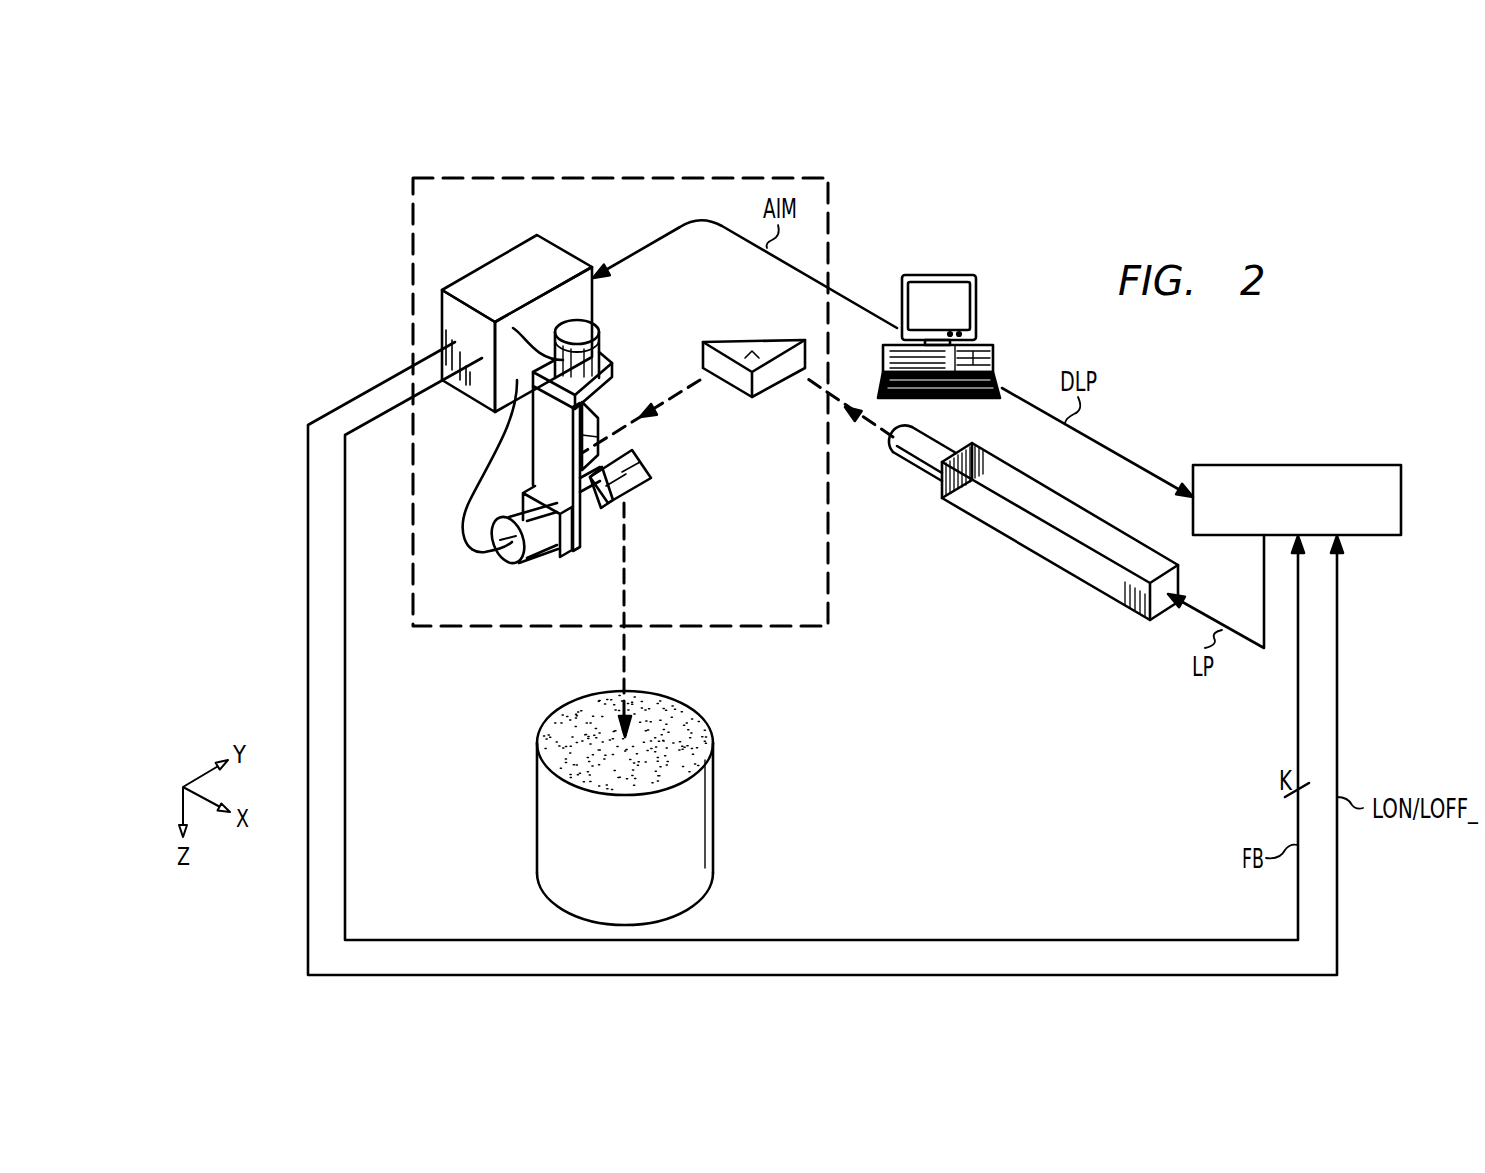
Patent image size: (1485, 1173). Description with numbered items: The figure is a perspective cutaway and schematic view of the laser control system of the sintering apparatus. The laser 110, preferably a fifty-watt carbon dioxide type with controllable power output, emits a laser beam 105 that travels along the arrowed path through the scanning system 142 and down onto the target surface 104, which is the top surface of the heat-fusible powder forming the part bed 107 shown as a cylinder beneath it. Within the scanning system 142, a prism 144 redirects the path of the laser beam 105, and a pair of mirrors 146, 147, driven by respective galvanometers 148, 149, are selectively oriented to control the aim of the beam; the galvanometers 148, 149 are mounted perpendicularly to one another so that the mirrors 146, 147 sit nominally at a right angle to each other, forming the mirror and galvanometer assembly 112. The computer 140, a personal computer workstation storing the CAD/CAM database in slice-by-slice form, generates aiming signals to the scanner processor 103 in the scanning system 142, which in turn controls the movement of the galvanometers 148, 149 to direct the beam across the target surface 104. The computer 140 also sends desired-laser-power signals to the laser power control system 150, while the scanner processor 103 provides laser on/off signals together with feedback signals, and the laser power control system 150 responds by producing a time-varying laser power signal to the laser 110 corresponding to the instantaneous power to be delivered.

The scanner processor 103 is at (482, 277).
The target surface 104 is at (574, 713).
The laser beam 105 is at (628, 655).
The part bed 107 is at (545, 820).
The laser 110 is at (1020, 533).
The scan head optics assembly 112 is at (662, 452).
The computer 140 is at (947, 273).
The scanning system 142 is at (592, 178).
The prism 144 is at (753, 343).
The mirror 146 is at (590, 433).
The mirror 147 is at (640, 482).
The galvanometer 148 is at (588, 327).
The galvanometer 149 is at (510, 553).
The laser power control system 150 is at (1305, 465).